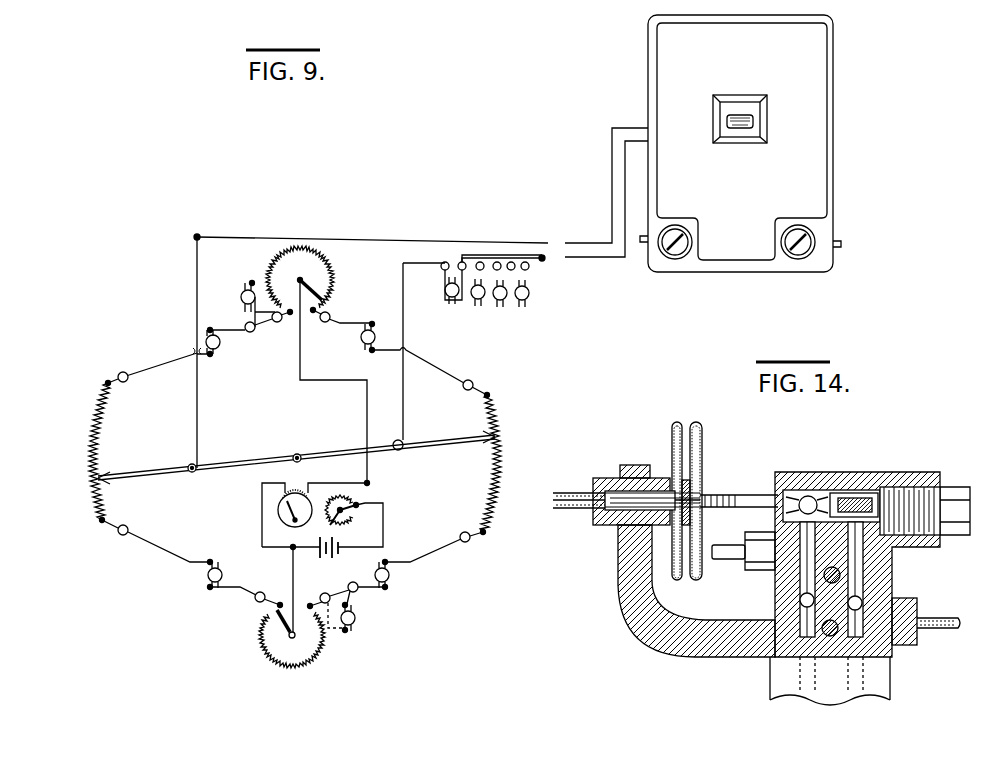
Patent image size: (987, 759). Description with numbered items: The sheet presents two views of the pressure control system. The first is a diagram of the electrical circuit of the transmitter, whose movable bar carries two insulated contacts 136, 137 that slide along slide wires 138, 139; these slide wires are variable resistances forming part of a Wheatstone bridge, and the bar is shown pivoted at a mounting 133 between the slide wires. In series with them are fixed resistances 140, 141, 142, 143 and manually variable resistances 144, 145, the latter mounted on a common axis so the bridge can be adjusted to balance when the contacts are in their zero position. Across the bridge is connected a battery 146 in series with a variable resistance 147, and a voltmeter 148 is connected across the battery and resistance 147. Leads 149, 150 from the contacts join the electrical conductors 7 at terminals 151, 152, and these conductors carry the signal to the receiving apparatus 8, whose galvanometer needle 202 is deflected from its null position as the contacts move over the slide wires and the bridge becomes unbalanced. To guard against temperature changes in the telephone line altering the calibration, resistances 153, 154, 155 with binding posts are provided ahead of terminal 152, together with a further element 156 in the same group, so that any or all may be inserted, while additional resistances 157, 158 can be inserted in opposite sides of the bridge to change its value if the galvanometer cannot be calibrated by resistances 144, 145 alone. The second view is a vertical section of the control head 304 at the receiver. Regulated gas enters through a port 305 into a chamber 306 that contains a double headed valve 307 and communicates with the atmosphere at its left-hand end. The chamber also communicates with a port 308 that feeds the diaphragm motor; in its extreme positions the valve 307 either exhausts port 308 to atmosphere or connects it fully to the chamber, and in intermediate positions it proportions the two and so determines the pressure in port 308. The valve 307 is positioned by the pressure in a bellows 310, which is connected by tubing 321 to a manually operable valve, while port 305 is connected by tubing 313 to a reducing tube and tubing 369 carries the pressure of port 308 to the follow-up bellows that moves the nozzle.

In FIG. 9, the electrical conductors 7 is at (565, 234).
In FIG. 9, the receiving apparatus 8 is at (843, 95).
In FIG. 9, the needle 202 is at (738, 106).
In FIG. 9, the arm 133 is at (292, 455).
In FIG. 9, the contact 136 is at (101, 476).
In FIG. 9, the contact 137 is at (487, 441).
In FIG. 9, the slide wire 138 is at (88, 421).
In FIG. 9, the slide wire 139 is at (502, 482).
In FIG. 9, the fixed resistance 140 is at (219, 348).
In FIG. 9, the fixed resistance 141 is at (207, 572).
In FIG. 9, the fixed resistance 142 is at (361, 339).
In FIG. 9, the fixed resistance 143 is at (390, 576).
In FIG. 9, the manually variable resistance 144 is at (331, 268).
In FIG. 9, the manually variable resistance 145 is at (262, 648).
In FIG. 9, the battery 146 is at (326, 561).
In FIG. 9, the variable resistance 147 is at (332, 495).
In FIG. 9, the voltmeter 148 is at (278, 509).
In FIG. 9, the lead 149 is at (195, 407).
In FIG. 9, the lead 150 is at (401, 404).
In FIG. 9, the terminal 151 is at (197, 235).
In FIG. 9, the terminal 152 is at (545, 261).
In FIG. 9, the resistance 153 is at (446, 292).
In FIG. 9, the resistance 154 is at (475, 303).
In FIG. 9, the resistance 155 is at (503, 303).
In FIG. 9, the relay 156 is at (528, 294).
In FIG. 9, the additional resistance 157 is at (243, 292).
In FIG. 9, the additional resistance 158 is at (357, 621).
In FIG. 14, the control head 304 is at (927, 461).
In FIG. 14, the port 305 is at (860, 575).
In FIG. 14, the chamber 306 is at (858, 492).
In FIG. 14, the double headed valve 307 is at (806, 494).
In FIG. 14, the port 308 is at (800, 580).
In FIG. 14, the bellows 310 is at (703, 448).
In FIG. 14, the tubing 313 is at (950, 632).
In FIG. 14, the tubing 321 is at (568, 512).
In FIG. 14, the tubing 369 is at (735, 551).